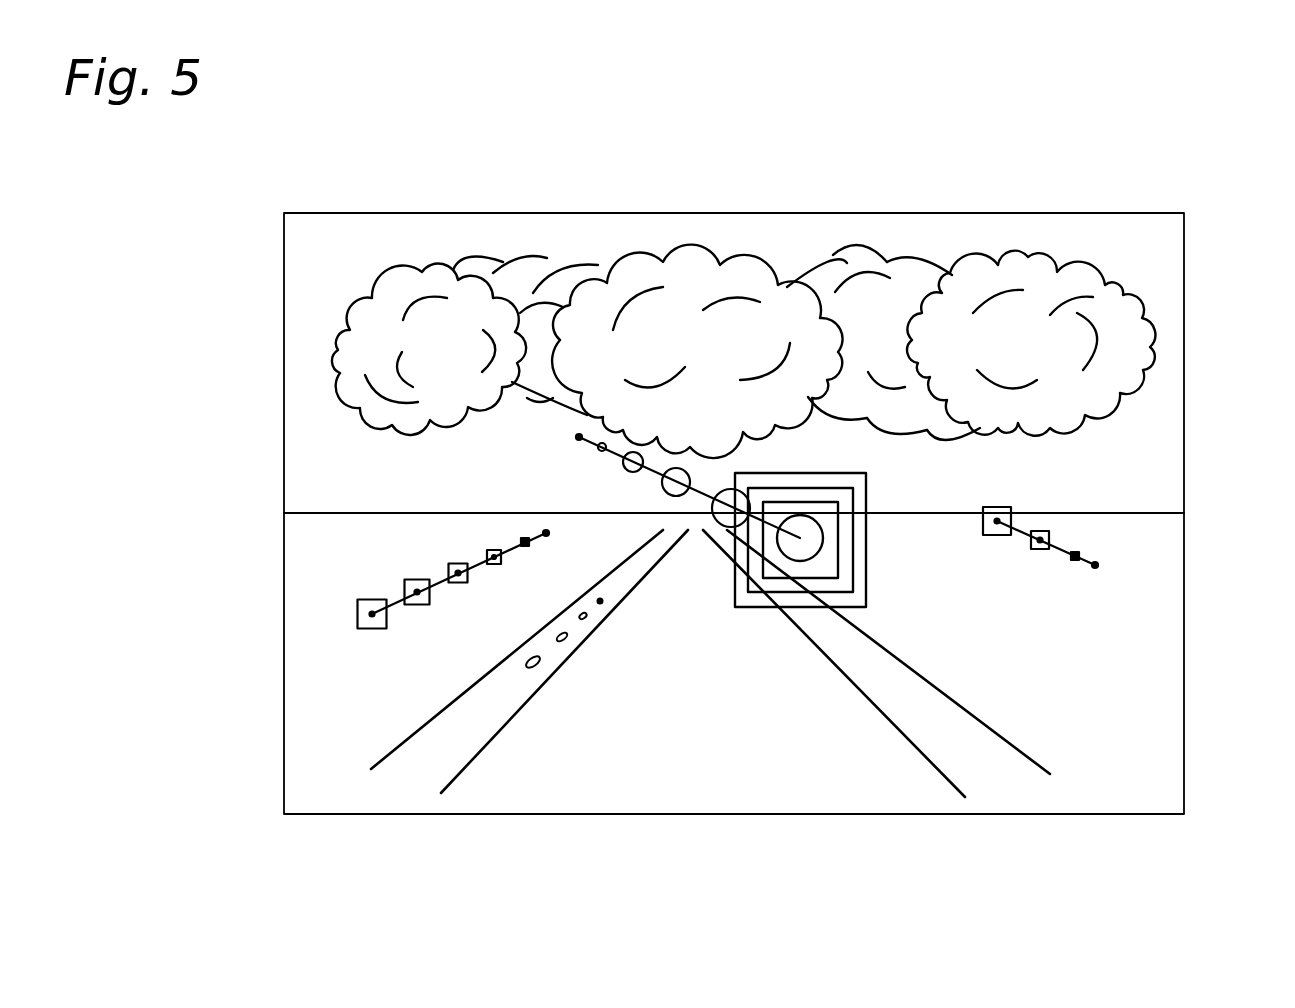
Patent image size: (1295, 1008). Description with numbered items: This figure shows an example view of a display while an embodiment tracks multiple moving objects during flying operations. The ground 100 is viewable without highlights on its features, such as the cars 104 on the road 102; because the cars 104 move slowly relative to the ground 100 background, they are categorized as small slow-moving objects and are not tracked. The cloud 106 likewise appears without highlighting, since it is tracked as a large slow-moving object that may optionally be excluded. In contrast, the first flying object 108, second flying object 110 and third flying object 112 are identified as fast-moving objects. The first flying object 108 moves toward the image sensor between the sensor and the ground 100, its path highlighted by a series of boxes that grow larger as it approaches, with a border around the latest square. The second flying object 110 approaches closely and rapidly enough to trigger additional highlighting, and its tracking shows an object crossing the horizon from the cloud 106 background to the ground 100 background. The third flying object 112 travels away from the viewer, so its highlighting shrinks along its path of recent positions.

The ground 100 is at (800, 767).
The road 102 is at (482, 753).
The cars 104 is at (586, 620).
The cloud 106 is at (692, 252).
The first flying object 108 is at (372, 598).
The second flying object 110 is at (870, 595).
The third flying object 112 is at (1045, 525).